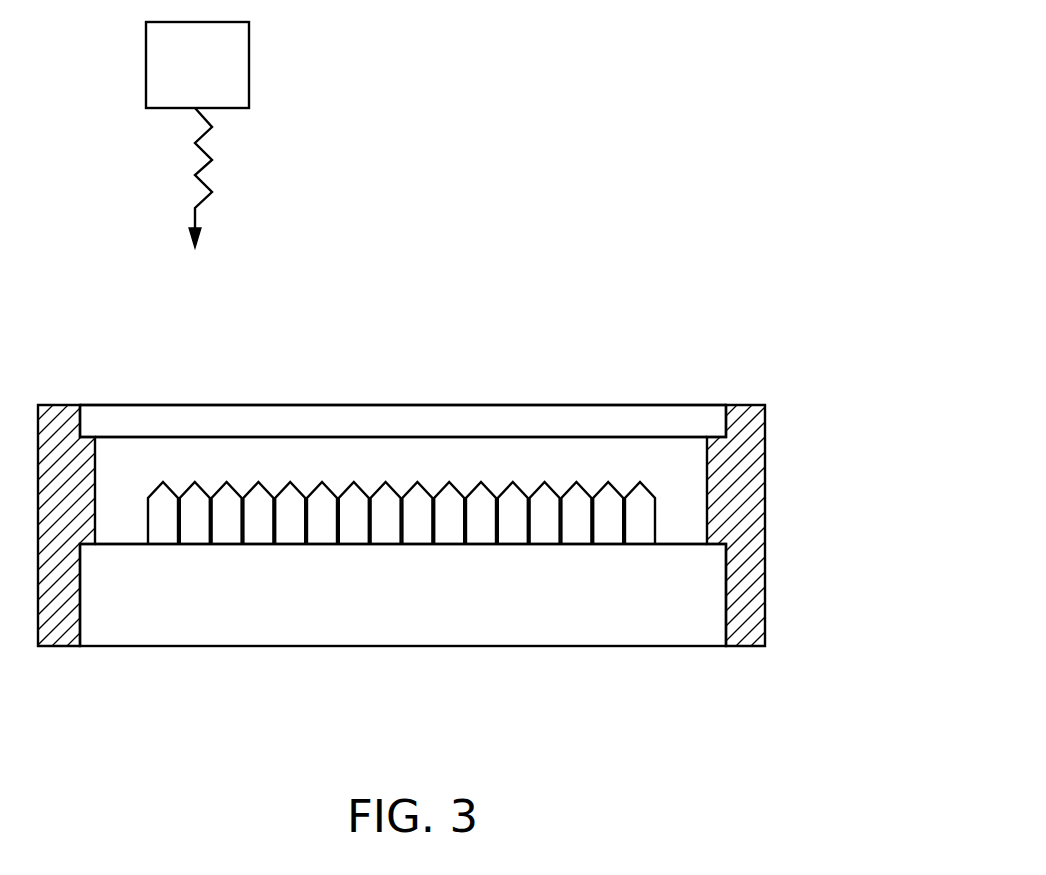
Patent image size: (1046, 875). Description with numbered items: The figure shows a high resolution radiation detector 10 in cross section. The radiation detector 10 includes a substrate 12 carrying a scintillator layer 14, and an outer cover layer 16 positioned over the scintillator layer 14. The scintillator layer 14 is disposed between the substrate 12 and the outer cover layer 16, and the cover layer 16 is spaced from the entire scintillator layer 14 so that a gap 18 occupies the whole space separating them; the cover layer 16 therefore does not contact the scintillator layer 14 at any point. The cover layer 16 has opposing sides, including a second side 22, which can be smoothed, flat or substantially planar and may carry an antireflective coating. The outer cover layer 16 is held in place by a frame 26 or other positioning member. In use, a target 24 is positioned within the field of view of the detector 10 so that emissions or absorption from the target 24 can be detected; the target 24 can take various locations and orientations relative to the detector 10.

The radiation detector 10 is at (843, 192).
The substrate 12 is at (647, 638).
The scintillator layer 14 is at (164, 482).
The outer cover layer 16 is at (402, 403).
The gap 18 is at (537, 455).
The second side 22 is at (686, 404).
The target 24 is at (249, 62).
The frame 26 is at (765, 490).